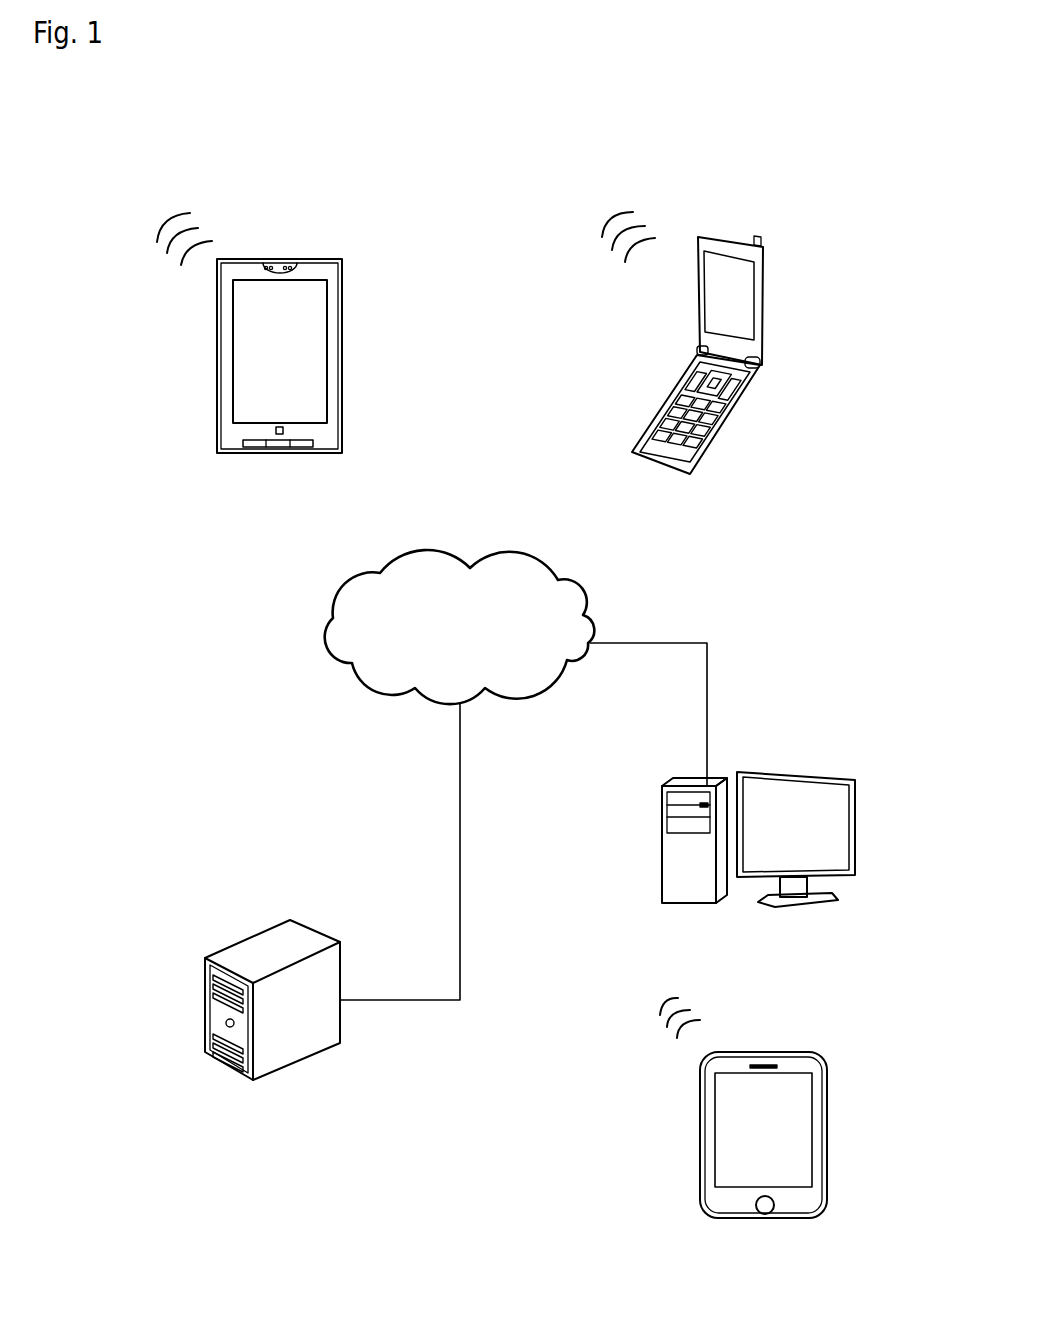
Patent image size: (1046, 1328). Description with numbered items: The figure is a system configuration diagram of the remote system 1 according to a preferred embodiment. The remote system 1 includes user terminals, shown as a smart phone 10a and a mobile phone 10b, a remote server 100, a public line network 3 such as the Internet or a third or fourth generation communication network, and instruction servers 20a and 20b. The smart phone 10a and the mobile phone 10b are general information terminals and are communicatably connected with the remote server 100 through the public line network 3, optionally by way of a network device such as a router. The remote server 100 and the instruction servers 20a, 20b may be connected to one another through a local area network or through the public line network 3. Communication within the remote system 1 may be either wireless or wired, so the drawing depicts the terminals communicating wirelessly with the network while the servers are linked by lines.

The remote system 1 is at (121, 640).
The smart phone 10a is at (275, 258).
The mobile phone 10b is at (770, 286).
The public line network 3 is at (549, 570).
The instruction server 20a is at (832, 778).
The instruction server 20b is at (818, 1062).
The remote server 100 is at (292, 920).